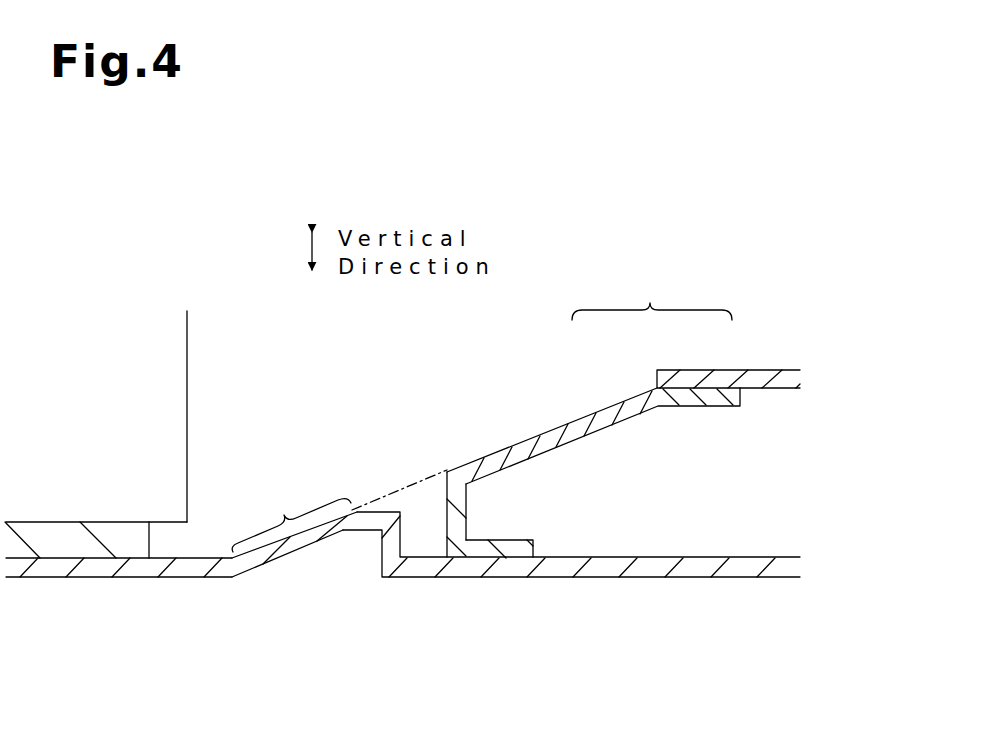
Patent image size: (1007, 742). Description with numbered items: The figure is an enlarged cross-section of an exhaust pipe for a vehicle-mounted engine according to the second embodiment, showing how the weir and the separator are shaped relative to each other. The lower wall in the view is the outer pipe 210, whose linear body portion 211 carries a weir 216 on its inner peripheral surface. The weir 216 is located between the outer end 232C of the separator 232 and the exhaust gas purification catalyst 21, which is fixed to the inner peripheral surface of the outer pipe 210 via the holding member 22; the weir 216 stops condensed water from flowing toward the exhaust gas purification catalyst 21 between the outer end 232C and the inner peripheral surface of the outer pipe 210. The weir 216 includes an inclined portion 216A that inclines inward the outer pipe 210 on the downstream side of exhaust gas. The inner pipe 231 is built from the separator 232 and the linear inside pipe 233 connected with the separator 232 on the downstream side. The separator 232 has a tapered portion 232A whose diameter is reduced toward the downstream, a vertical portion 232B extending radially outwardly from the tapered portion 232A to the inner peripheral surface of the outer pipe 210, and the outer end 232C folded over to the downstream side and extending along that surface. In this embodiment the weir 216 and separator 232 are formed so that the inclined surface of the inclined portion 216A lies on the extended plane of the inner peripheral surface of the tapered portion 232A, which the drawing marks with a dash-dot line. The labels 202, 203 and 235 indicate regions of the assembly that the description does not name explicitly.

The upper housing member 202 is at (100, 312).
The exhaust gas purification catalyst 21 is at (187, 349).
The holding member 22 is at (149, 545).
The outer pipe 210 is at (403, 554).
The body portion 211 is at (637, 578).
The weir 216 is at (292, 464).
The inclined portion 216A is at (291, 516).
The bracket assembly 203 is at (610, 412).
The inner pipe 231 is at (652, 298).
The separator 232 is at (580, 474).
The tapered portion 232A is at (622, 421).
The vertical portion 232B is at (458, 526).
The outer end 232C is at (531, 548).
The inside pipe 233 is at (705, 370).
The space 235 is at (717, 519).